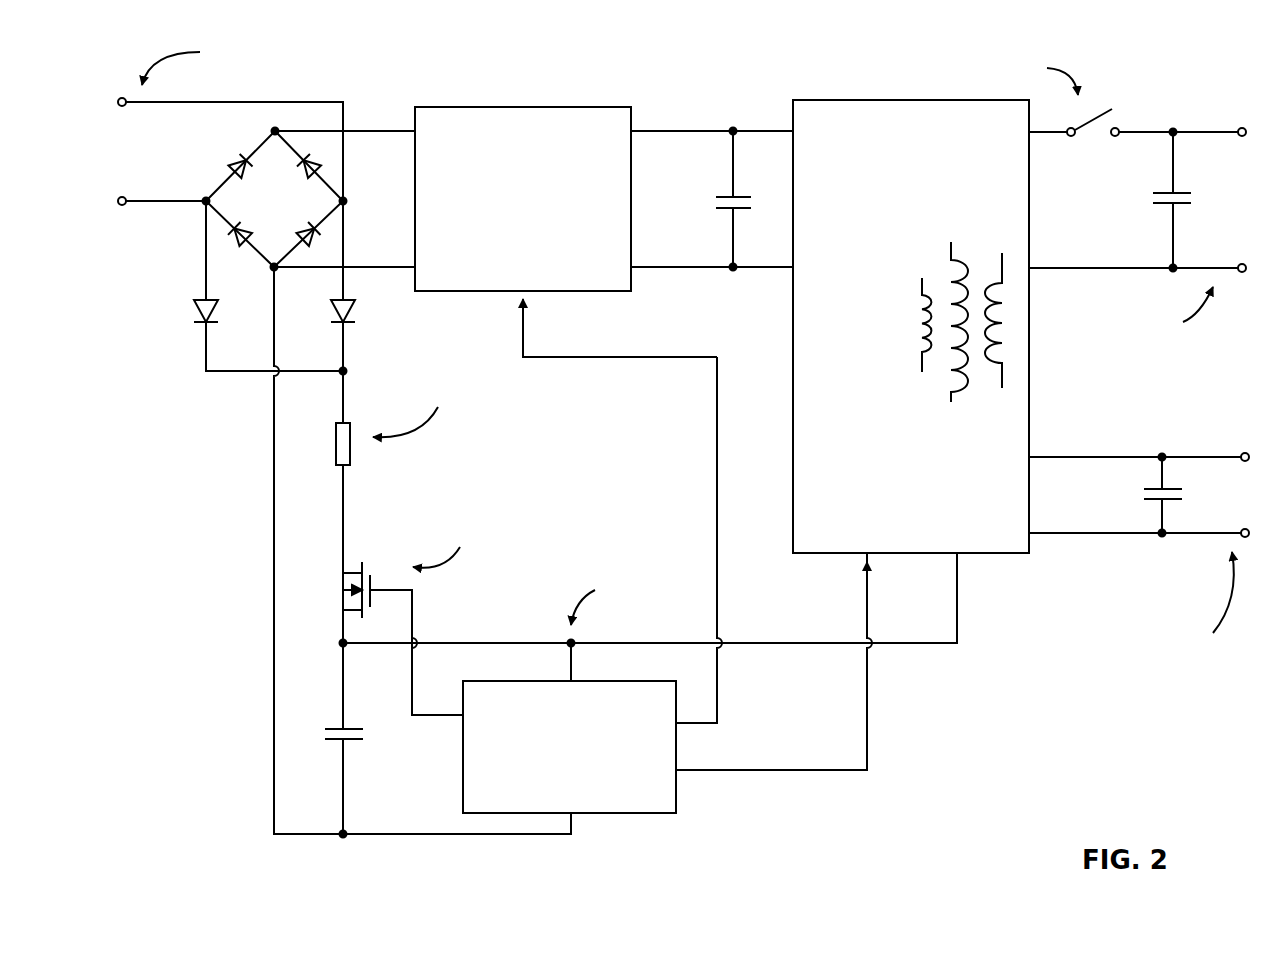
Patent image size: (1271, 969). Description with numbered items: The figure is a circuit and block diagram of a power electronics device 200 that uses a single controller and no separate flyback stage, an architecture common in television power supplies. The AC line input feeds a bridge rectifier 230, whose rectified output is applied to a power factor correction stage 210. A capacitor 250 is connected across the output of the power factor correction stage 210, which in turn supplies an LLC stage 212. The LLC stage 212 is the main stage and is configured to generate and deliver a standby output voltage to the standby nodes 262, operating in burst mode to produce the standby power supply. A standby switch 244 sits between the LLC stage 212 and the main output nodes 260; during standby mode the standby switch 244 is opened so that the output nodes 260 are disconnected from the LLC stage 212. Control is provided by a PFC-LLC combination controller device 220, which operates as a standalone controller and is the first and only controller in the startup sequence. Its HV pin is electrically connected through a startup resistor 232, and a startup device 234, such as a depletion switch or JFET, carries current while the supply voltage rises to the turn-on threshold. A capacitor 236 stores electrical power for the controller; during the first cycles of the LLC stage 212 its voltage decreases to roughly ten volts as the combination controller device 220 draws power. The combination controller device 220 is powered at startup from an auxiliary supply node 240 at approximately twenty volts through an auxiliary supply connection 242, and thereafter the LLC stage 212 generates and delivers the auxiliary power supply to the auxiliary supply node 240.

The power electronics device 200 is at (1147, 725).
The power factor correction (PFC) stage 210 is at (523, 199).
The LLC stage 212 is at (911, 326).
The combination controller device 220 is at (569, 747).
The bridge rectifier 230 is at (212, 172).
The startup resistor 232 is at (323, 438).
The startup device 234 is at (327, 590).
The capacitor 236 is at (312, 717).
The auxiliary supply node 240 is at (571, 642).
The auxiliary supply connection 242 is at (572, 679).
The standby switch 244 is at (1095, 155).
The capacitor 250 is at (712, 220).
The output nodes 260 is at (1203, 118).
The standby nodes 262 is at (1183, 438).